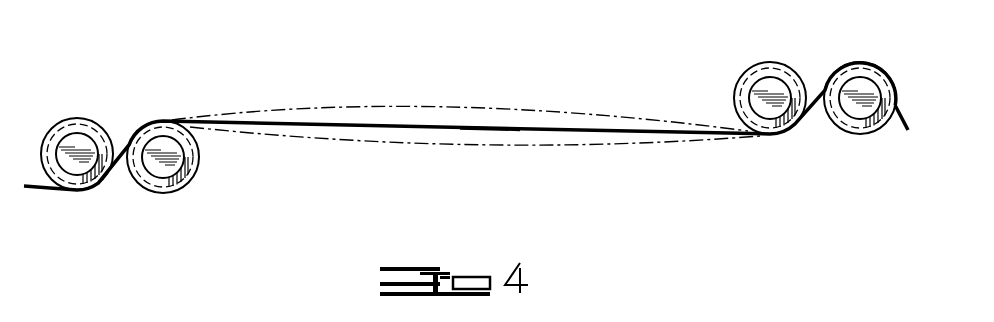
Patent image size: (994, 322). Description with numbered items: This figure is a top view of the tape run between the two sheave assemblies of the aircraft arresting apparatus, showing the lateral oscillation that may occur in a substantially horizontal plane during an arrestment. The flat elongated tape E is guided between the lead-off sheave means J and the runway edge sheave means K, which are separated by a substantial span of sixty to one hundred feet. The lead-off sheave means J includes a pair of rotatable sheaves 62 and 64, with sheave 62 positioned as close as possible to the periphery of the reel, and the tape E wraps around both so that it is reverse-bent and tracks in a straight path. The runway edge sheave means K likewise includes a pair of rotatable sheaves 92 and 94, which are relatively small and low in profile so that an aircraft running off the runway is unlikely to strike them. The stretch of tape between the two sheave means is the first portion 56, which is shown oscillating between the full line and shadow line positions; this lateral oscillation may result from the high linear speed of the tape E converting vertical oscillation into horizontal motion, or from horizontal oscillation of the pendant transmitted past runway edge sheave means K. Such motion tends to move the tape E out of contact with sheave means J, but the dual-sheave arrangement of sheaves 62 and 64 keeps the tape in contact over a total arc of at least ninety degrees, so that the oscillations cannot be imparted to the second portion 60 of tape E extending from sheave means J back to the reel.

The rotatable sheave 92 is at (87, 191).
The rotatable sheave 94 is at (191, 180).
The runway edge sheave means K is at (139, 149).
The crowned sheave 64 is at (775, 134).
The rotatable sheave 62 is at (851, 133).
The lead-off sheave means J is at (814, 95).
The first portion of tape 56 is at (553, 131).
The second portion of tape 60 is at (905, 132).
The flat elongated tape E is at (487, 128).